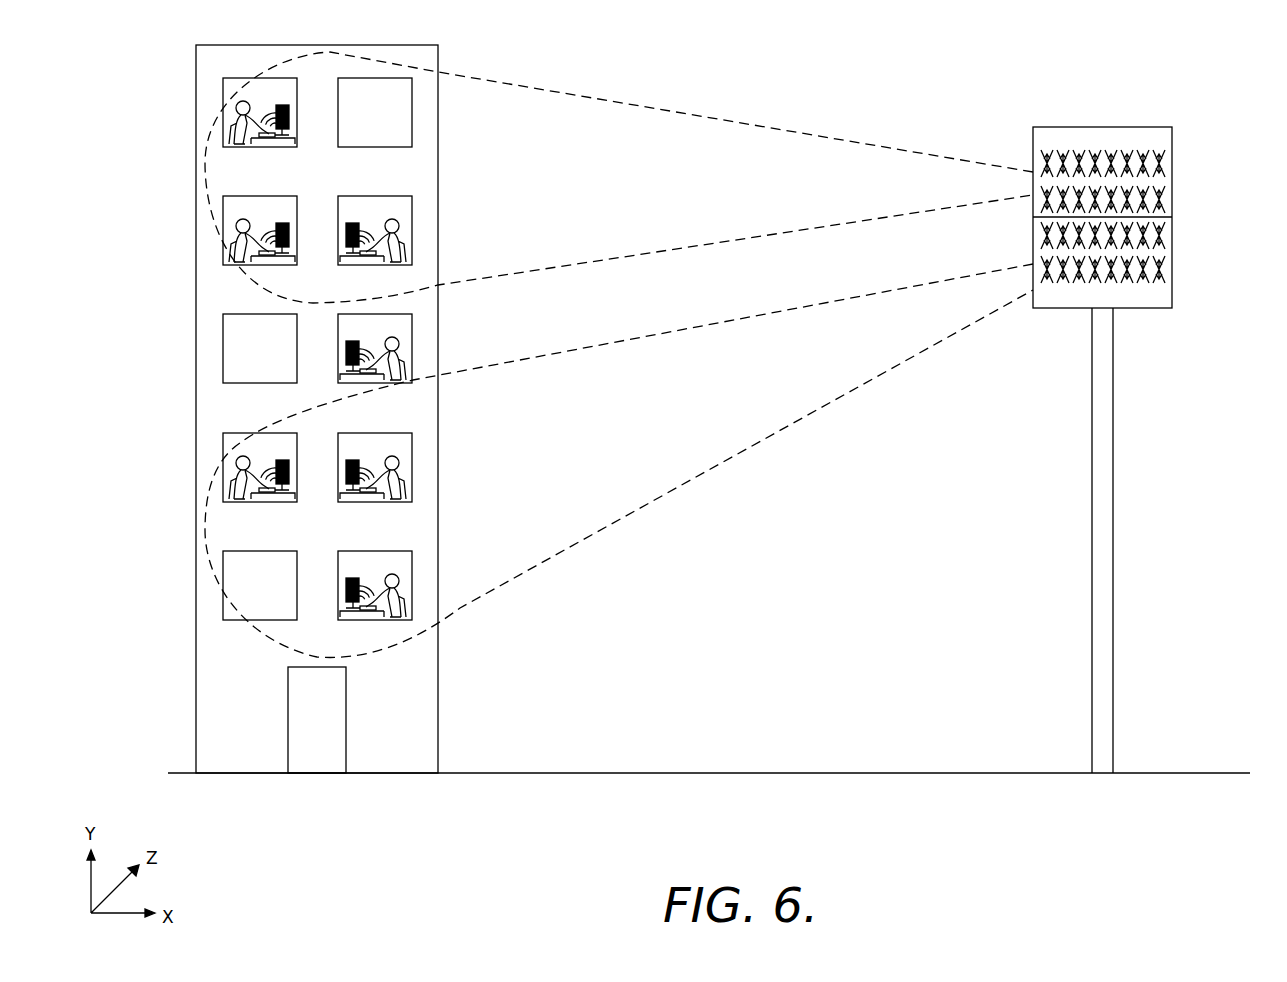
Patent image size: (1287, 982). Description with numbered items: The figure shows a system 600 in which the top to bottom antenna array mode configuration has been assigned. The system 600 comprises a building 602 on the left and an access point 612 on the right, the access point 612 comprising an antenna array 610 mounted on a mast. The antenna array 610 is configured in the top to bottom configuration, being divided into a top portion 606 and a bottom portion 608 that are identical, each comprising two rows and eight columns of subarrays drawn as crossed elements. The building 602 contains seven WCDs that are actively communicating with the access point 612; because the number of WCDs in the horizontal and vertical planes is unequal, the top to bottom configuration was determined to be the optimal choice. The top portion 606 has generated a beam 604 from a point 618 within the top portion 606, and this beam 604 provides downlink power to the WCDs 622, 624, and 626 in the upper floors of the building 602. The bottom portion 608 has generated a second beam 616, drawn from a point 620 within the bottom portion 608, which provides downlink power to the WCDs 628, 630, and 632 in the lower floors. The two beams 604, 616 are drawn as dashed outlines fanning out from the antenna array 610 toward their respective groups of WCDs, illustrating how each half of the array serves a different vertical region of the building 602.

The system 600 is at (1240, 118).
The building 602 is at (372, 38).
The beam 604 is at (689, 114).
The top portion 606 is at (1113, 127).
The bottom portion 608 is at (1155, 309).
The antenna array 610 is at (1188, 236).
The access point 612 is at (1114, 727).
The second beam 616 is at (722, 462).
The point 618 is at (1098, 185).
The second antenna element 620 is at (1102, 250).
The WCD 622 is at (222, 97).
The WCD 624 is at (222, 215).
The WCD 626 is at (412, 218).
The WCD 628 is at (412, 449).
The WCD 630 is at (222, 446).
The WCD 632 is at (412, 568).